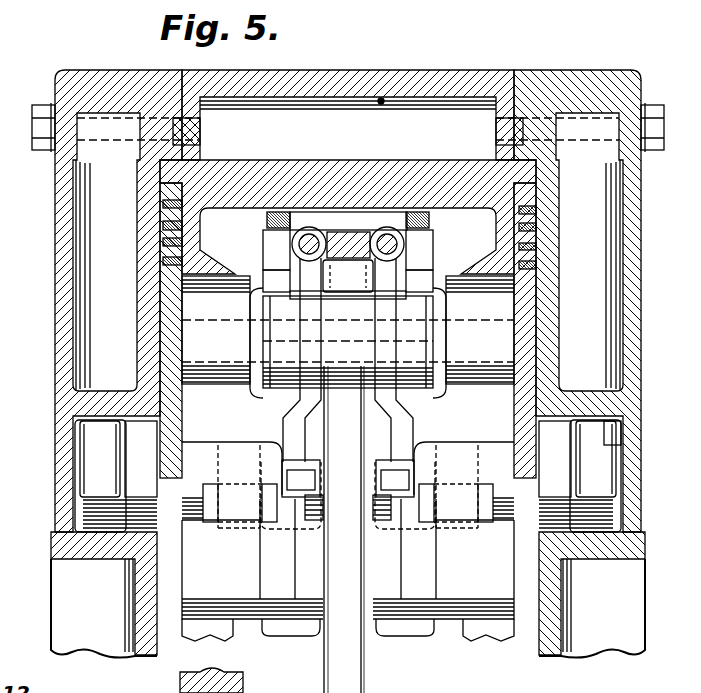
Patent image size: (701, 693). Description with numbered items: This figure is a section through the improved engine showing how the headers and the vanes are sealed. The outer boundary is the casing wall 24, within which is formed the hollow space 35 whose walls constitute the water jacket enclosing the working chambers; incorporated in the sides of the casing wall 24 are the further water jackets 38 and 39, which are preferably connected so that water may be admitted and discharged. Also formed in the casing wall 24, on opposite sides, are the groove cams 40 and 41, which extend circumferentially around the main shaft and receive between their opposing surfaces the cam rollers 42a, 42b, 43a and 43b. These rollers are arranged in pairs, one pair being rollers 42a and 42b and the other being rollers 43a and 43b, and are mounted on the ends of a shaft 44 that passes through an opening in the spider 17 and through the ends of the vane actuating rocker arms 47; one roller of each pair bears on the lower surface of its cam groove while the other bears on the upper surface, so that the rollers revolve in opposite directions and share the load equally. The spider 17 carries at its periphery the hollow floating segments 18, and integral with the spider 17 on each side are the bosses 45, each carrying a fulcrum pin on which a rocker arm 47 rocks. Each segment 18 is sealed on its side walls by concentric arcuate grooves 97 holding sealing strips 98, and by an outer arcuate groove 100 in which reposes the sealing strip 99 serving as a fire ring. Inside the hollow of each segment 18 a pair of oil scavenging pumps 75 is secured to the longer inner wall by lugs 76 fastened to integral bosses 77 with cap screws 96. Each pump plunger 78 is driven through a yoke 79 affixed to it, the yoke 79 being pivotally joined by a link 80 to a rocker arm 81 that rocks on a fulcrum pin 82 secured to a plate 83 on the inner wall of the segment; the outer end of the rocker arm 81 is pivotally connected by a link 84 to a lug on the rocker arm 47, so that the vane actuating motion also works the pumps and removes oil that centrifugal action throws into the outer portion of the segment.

The spider 17 is at (351, 680).
The floating segment 18 is at (170, 331).
The casing wall 24 is at (331, 72).
The hollow space 35 is at (384, 98).
The water jacket 38 is at (80, 264).
The water jacket 39 is at (613, 292).
The groove cam 40 is at (619, 445).
The groove cam 41 is at (76, 435).
The cam roller 42a is at (556, 431).
The cam roller 42b is at (616, 426).
The cam roller 43a is at (133, 482).
The cam roller 43b is at (96, 453).
The shaft 44 is at (606, 484).
The boss 45 is at (376, 619).
The rocker arm 47 is at (443, 460).
The pump 75 is at (354, 222).
The lug 76 is at (434, 242).
The boss 77 is at (434, 222).
The pump plunger 78 is at (389, 230).
The yoke 79 is at (322, 238).
The link 80 is at (373, 288).
The rocker arm 81 is at (380, 333).
The fulcrum pin 82 is at (455, 318).
The plate 83 is at (458, 339).
The link 84 is at (370, 456).
The cap screw 96 is at (434, 262).
The arcuate groove 97 is at (540, 264).
The sealing strip 98 is at (163, 225).
The sealing strip 99 is at (533, 208).
The outer arcuate groove 100 is at (163, 203).